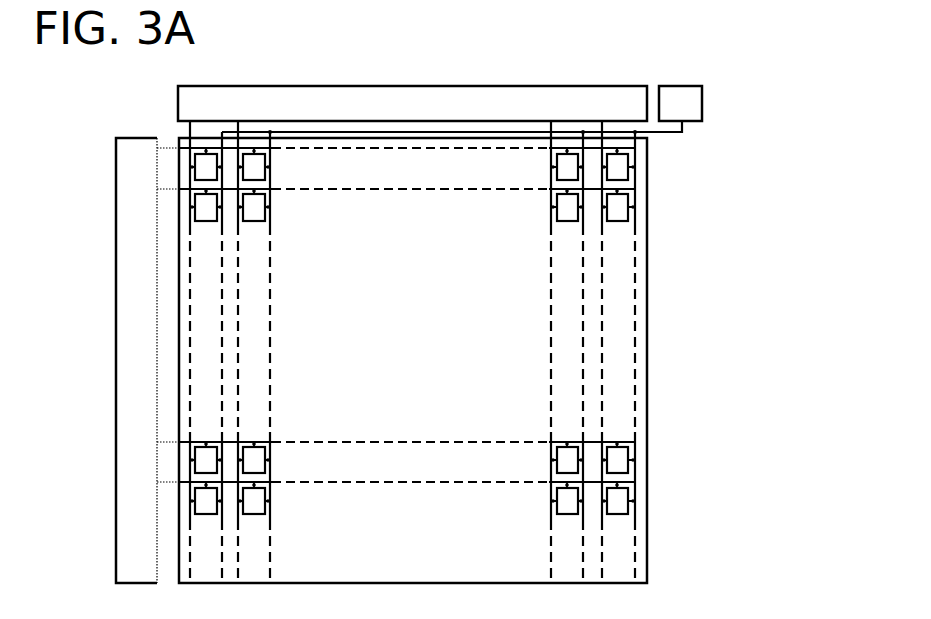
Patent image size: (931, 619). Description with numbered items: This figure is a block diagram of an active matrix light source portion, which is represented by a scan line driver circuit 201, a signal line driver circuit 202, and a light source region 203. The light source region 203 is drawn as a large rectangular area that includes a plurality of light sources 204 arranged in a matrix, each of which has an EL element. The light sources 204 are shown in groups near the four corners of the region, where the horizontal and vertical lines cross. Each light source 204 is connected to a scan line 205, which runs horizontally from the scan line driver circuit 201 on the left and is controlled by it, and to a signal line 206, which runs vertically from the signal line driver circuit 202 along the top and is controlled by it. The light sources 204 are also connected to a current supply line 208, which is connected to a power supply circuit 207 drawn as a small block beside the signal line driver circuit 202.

The scan line driver circuit 201 is at (136, 360).
The signal line driver circuit 202 is at (412, 103).
The light source region 203 is at (650, 253).
The light source 204 is at (622, 460).
The scan line 205 is at (167, 148).
The signal line 206 is at (607, 547).
The power supply circuit 207 is at (703, 113).
The current supply line 208 is at (640, 148).